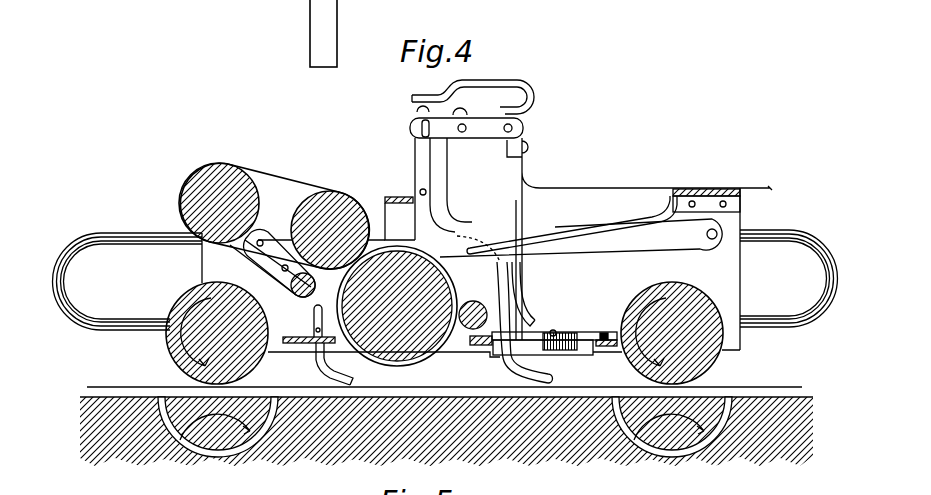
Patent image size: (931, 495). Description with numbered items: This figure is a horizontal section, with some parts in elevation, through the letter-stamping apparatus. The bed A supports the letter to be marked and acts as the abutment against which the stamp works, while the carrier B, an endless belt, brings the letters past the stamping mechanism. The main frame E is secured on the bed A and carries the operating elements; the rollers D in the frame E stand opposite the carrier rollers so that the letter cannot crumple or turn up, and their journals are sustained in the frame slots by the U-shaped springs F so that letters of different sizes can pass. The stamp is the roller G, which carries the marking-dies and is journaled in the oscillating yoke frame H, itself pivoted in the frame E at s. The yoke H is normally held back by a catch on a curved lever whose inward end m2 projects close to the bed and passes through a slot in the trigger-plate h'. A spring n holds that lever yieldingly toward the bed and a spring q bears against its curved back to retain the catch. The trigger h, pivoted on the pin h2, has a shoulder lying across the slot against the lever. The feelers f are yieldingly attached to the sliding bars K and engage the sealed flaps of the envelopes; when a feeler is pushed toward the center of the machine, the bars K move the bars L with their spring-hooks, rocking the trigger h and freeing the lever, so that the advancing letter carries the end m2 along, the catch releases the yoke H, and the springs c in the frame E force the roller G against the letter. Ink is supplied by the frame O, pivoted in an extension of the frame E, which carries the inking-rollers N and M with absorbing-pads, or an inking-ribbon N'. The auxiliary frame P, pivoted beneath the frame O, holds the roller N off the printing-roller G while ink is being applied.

The bed A is at (446, 431).
The carrier B is at (397, 312).
The springs c is at (445, 328).
The rollers D is at (444, 333).
The main frame E is at (578, 239).
The U-shaped springs F is at (788, 268).
The feelers f is at (320, 370).
The roller G is at (397, 306).
The oscillating frame H is at (564, 269).
The trigger h is at (554, 330).
The trigger-plate h' is at (543, 358).
The pin h2 is at (555, 334).
The sliding bars K is at (312, 326).
The bars L is at (470, 346).
The inking-roller M is at (330, 230).
The end of lever m2 is at (500, 364).
The inking-roller N is at (219, 203).
The inking-ribbon N' is at (274, 210).
The spring n is at (472, 100).
The frame O is at (270, 251).
The auxiliary frame P is at (290, 286).
The spring q is at (523, 214).
The pivot s is at (716, 231).